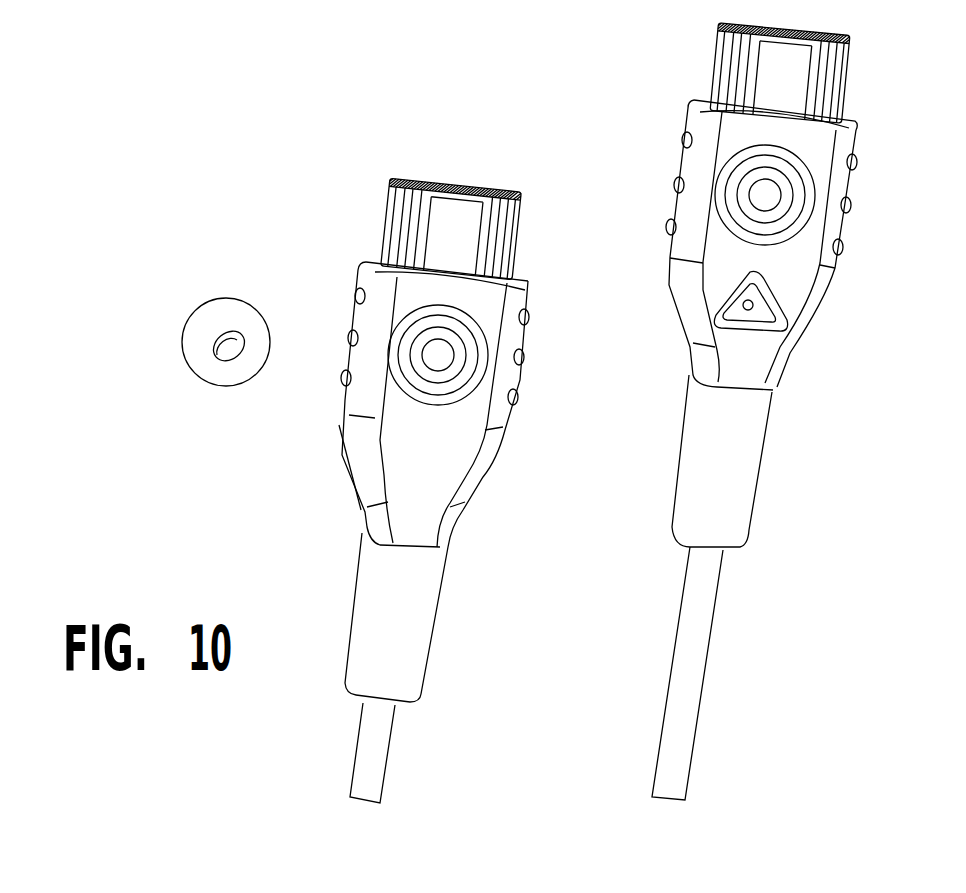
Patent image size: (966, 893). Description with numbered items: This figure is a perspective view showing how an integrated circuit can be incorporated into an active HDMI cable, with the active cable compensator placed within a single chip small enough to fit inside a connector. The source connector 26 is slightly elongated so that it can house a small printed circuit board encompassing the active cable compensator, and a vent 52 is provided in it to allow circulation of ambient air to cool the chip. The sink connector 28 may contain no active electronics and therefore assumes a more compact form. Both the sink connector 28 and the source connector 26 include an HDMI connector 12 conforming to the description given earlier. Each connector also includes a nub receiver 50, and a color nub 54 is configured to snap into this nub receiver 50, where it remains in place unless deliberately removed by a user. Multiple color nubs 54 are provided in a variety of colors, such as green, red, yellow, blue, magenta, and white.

The HDMI connector 12 is at (440, 187).
The source connector 26 is at (833, 197).
The sink connector 28 is at (365, 267).
The nub receiver 50 is at (457, 373).
The vent 52 is at (777, 338).
The color nub 54 is at (195, 357).